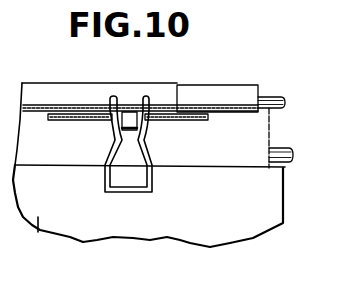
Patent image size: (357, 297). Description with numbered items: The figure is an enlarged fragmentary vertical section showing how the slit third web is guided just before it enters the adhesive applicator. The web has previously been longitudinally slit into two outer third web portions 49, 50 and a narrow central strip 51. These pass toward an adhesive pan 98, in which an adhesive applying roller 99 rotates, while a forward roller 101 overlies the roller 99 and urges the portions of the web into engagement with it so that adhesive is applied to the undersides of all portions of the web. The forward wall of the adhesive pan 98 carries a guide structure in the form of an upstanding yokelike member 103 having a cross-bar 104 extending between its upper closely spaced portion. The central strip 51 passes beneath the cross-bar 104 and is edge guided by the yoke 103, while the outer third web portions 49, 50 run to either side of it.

The outer third web portion 49 is at (177, 110).
The outer third web portion 50 is at (68, 120).
The central strip 51 is at (141, 131).
The adhesive pan 98 is at (38, 232).
The adhesive applying roller 99 is at (247, 135).
The forward roller 101 is at (237, 95).
The yokelike member 103 is at (153, 154).
The cross-bar 104 is at (123, 120).